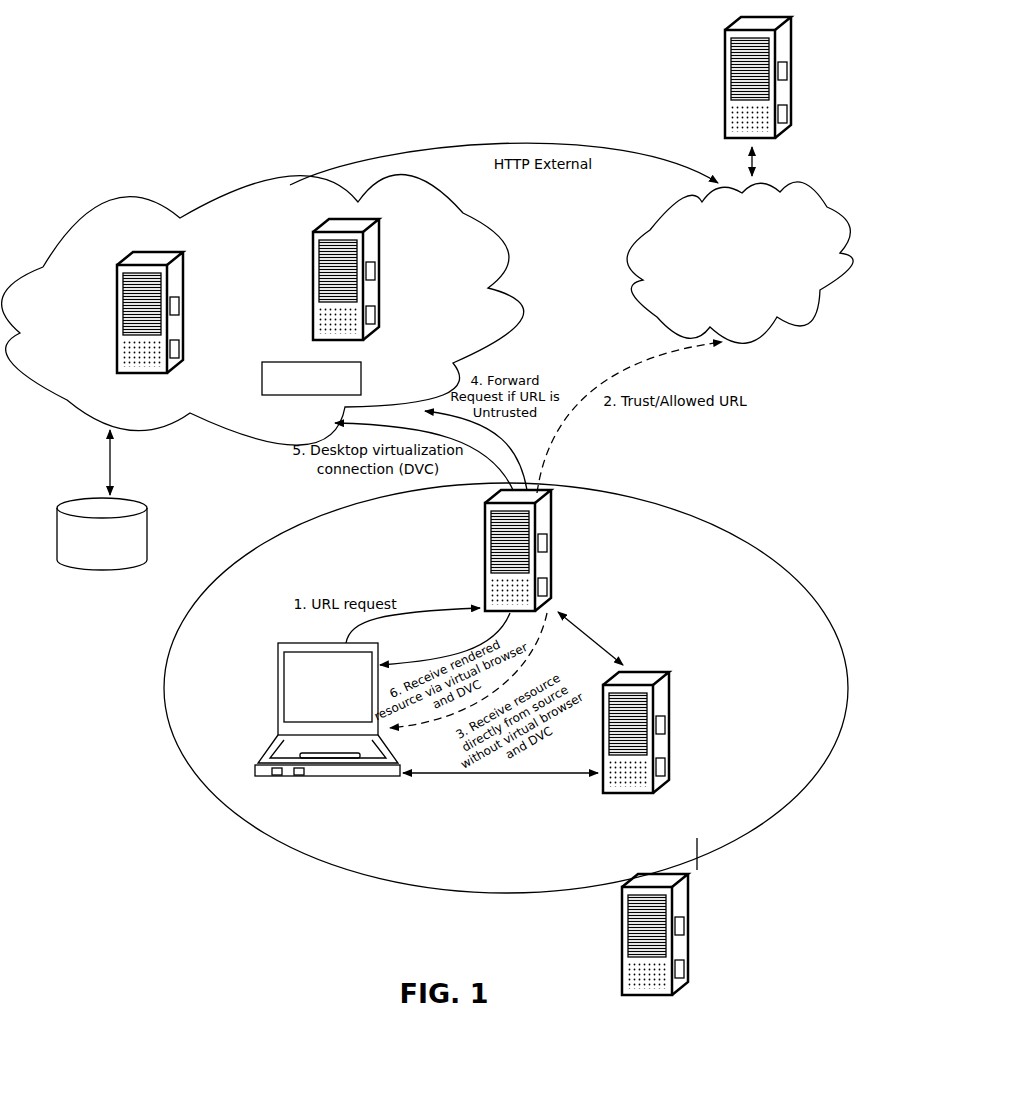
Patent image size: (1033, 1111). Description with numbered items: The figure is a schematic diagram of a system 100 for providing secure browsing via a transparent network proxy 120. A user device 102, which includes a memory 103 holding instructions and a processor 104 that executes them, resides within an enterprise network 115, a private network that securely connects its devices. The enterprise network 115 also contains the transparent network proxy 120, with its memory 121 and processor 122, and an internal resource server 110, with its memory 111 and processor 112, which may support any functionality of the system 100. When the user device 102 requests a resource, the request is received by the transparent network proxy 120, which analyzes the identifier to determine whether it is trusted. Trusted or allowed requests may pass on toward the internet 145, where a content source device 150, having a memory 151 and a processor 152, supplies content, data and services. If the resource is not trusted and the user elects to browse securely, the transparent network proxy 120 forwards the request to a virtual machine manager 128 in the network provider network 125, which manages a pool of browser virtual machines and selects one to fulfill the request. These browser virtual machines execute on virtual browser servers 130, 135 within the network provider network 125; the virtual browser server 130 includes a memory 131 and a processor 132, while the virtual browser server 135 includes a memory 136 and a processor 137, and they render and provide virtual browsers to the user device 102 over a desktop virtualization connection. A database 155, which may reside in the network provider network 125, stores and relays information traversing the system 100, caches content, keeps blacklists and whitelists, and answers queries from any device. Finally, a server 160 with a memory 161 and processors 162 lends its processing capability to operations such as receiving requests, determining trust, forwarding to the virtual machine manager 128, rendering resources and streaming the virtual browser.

The system 100 is at (318, 910).
The user device 102 is at (277, 680).
The memory 103 is at (277, 776).
The processor 104 is at (299, 776).
The internal resource server 110 is at (670, 693).
The memory 111 is at (665, 725).
The processor 112 is at (665, 767).
The enterprise network 115 is at (485, 890).
The transparent network proxy 120 is at (485, 527).
The memory 121 is at (547, 543).
The processor 122 is at (547, 588).
The network provider network 125 is at (223, 443).
The virtual machine manager 128 is at (270, 395).
The virtual browser server 130 is at (117, 287).
The memory 131 is at (179, 302).
The processor 132 is at (179, 347).
The virtual browser server 135 is at (313, 255).
The memory 136 is at (375, 270).
The processor 137 is at (375, 317).
The internet 145 is at (797, 325).
The content source device 150 is at (725, 57).
The memory 151 is at (787, 72).
The processor 152 is at (787, 115).
The database 155 is at (102, 534).
The server 160 is at (689, 892).
The memory 161 is at (684, 927).
The processor 162 is at (684, 967).